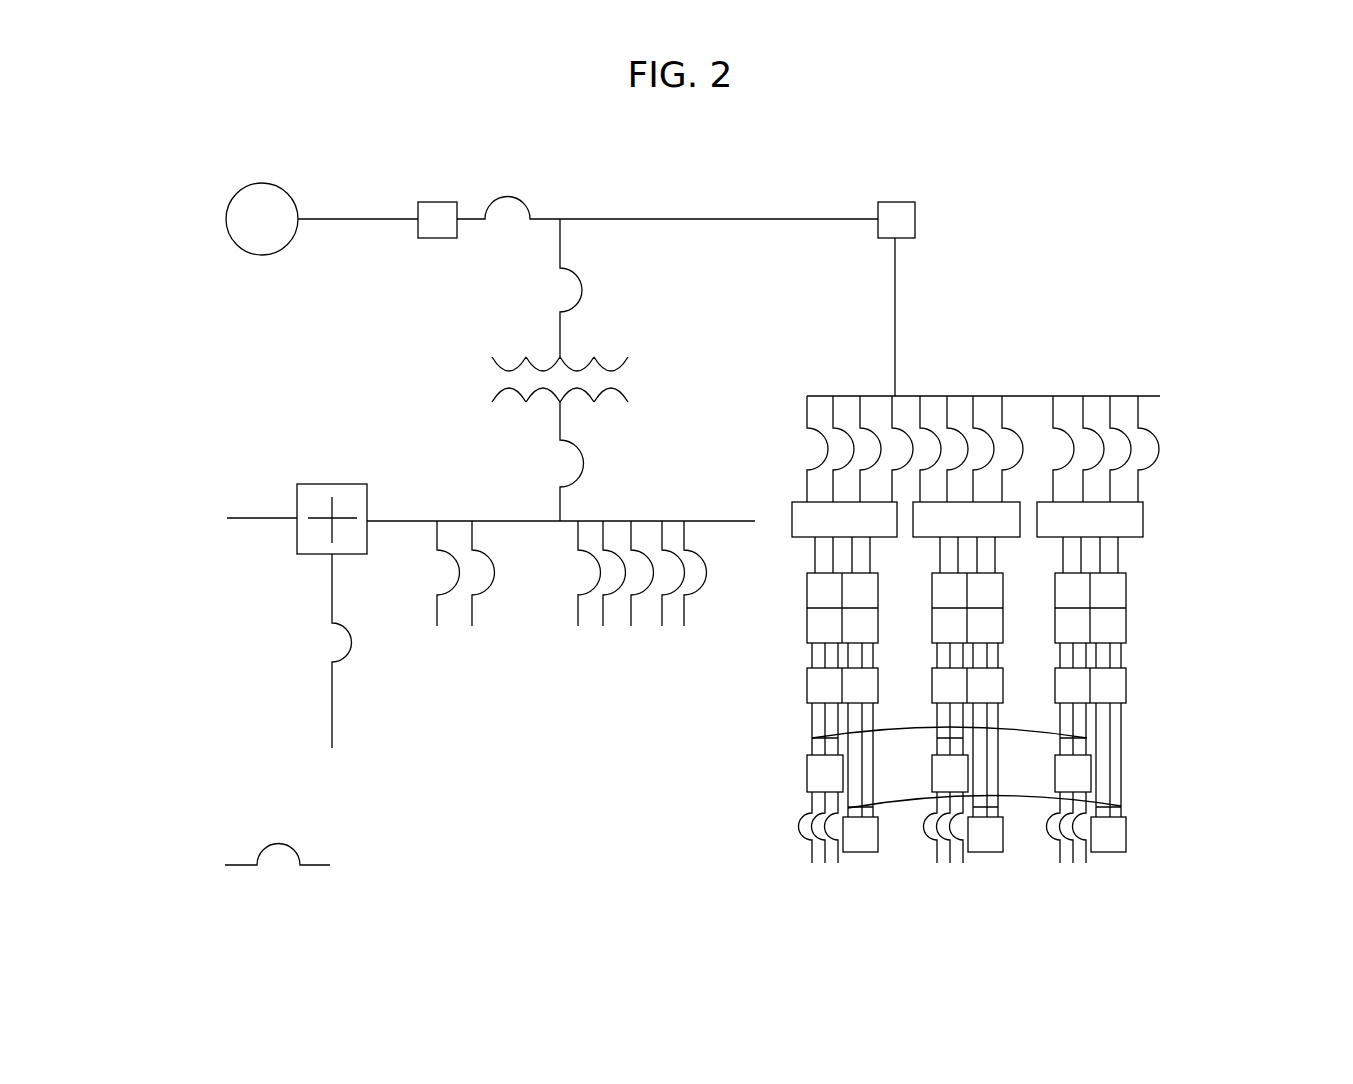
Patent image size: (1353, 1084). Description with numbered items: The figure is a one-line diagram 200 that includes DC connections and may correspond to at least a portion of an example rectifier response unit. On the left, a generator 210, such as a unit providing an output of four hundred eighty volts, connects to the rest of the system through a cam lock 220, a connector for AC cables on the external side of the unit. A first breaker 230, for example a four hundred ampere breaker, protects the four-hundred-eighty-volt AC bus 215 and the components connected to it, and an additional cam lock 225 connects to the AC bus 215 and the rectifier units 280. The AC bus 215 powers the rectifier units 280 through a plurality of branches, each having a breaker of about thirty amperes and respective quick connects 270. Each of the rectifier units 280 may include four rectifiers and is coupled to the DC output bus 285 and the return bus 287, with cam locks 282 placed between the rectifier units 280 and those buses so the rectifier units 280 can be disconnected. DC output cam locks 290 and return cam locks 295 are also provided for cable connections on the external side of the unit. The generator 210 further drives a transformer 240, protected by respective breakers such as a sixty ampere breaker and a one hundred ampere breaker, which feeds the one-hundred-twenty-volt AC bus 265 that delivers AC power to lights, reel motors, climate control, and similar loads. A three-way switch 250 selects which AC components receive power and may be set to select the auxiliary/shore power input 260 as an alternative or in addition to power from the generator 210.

The one-line diagram 200 is at (107, 101).
The generator 210 is at (262, 255).
The 480V AC bus 215 is at (1037, 396).
The cam lock 220 is at (440, 240).
The cam lock 225 is at (915, 217).
The first breaker 230 is at (373, 874).
The transformer 240 is at (584, 466).
The three-way switch 250 is at (313, 483).
The auxiliary/shore power input 260 is at (208, 507).
The 120V AC bus 265 is at (508, 517).
The quick connects 270 is at (1173, 507).
The rectifier units 280 is at (1166, 598).
The cam locks 282 is at (1156, 661).
The DC output bus 285 is at (910, 730).
The return bus 287 is at (1030, 800).
The DC output cam locks 290 is at (1156, 743).
The return cam locks 295 is at (1156, 791).